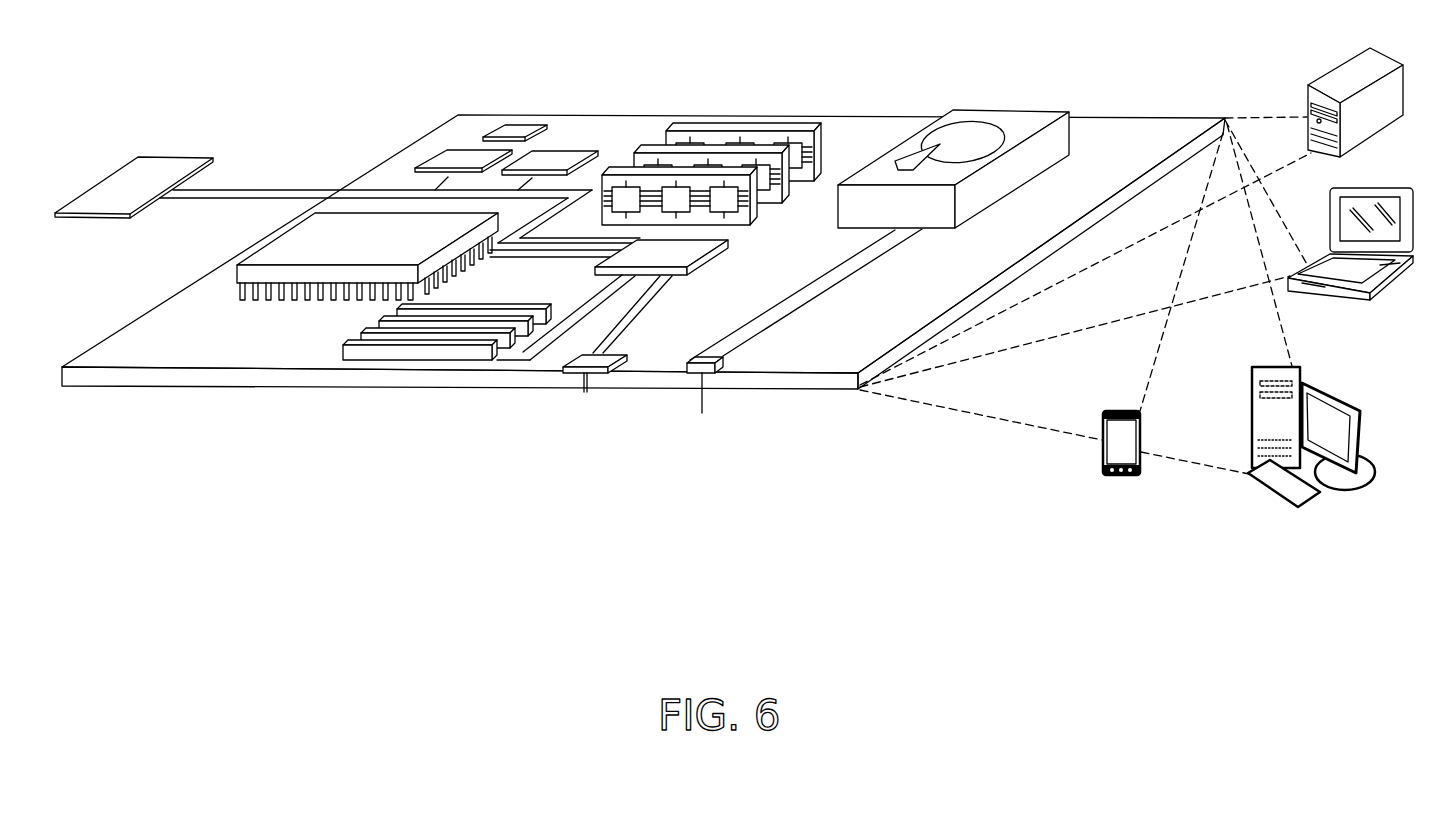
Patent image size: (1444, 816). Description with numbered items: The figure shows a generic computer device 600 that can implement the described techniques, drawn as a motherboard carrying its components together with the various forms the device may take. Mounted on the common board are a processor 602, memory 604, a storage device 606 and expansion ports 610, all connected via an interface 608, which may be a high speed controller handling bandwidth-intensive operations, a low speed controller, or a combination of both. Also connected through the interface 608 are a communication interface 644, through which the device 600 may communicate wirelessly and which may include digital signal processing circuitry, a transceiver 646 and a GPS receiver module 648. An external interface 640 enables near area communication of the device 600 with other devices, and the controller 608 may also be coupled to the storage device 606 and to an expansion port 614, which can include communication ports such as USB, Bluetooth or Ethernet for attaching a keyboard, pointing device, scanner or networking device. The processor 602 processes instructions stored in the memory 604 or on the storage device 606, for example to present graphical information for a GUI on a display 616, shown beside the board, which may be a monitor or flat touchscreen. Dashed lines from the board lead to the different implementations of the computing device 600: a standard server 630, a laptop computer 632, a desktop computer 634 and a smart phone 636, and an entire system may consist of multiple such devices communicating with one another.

The computer device 600 is at (380, 79).
The processor 602 is at (262, 247).
The memory 604 is at (747, 128).
The storage device 606 is at (1000, 110).
The interface 608 is at (600, 271).
The expansion ports 610 is at (372, 332).
The expansion port 614 is at (725, 362).
The display 616 is at (164, 171).
The standard server 630 is at (1332, 78).
The laptop computer 632 is at (1387, 188).
The desktop computer 634 is at (1353, 388).
The smart phone 636 is at (1112, 477).
The external interface 640 is at (610, 353).
The communication interface 644 is at (463, 152).
The transceiver 646 is at (518, 130).
The GPS receiver module 648 is at (558, 155).